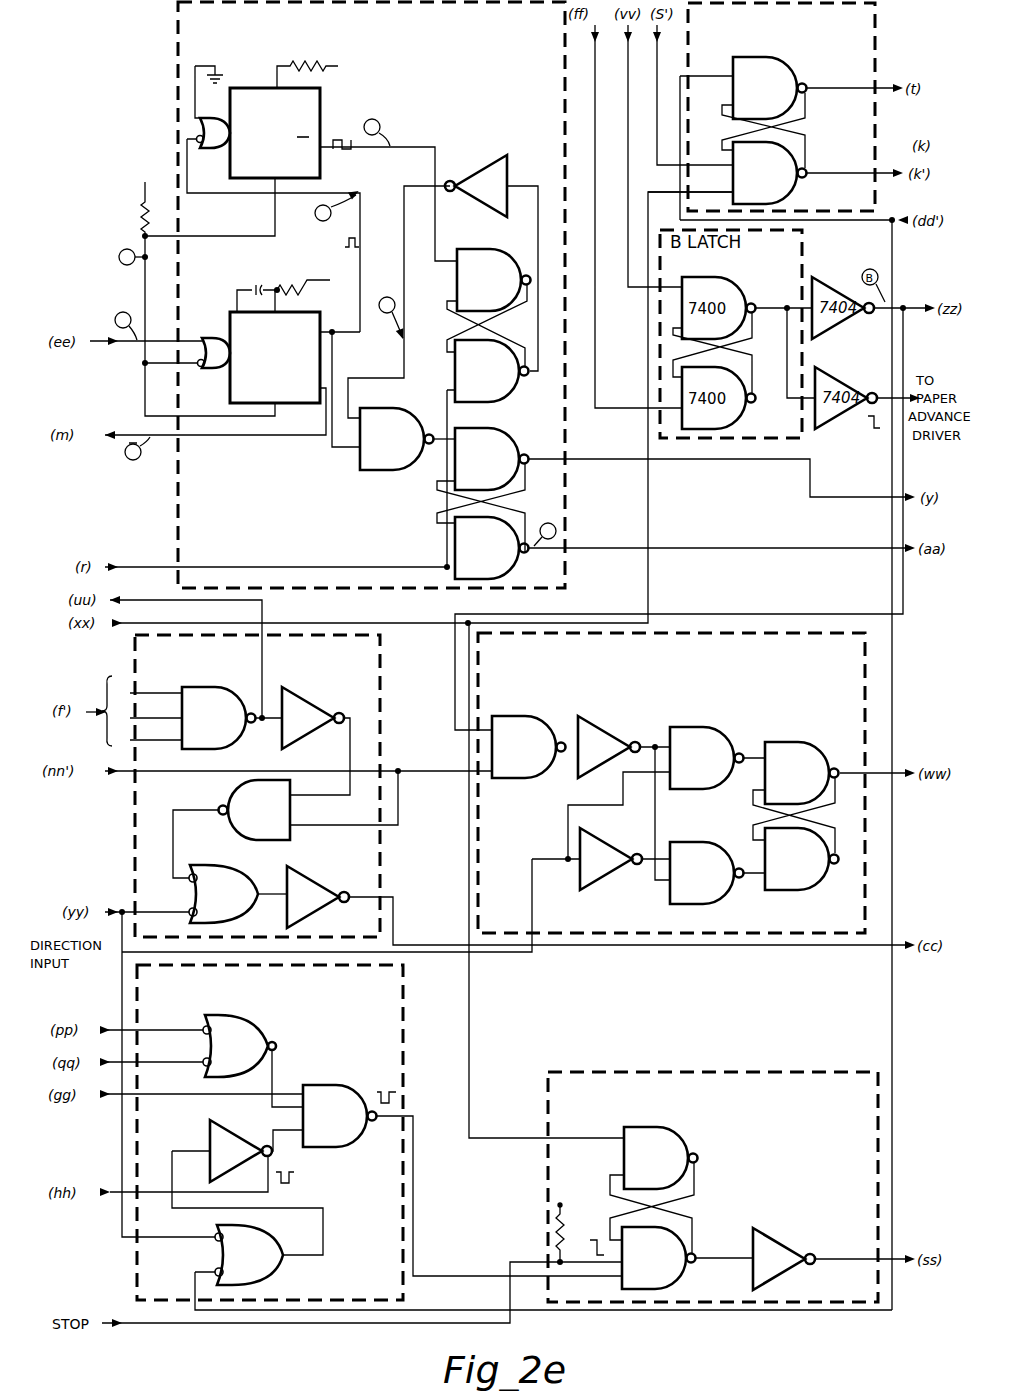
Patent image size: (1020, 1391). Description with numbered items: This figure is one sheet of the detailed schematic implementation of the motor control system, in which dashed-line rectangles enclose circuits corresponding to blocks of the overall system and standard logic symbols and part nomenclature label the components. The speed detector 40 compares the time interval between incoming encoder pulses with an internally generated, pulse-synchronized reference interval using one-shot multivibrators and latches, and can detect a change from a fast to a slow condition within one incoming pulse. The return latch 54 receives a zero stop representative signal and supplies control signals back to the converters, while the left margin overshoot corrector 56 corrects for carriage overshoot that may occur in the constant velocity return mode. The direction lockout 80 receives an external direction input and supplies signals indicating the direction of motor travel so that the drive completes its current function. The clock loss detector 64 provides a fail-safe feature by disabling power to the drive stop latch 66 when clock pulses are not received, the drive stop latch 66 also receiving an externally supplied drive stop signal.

The speed detector 40 is at (180, 53).
The return latch 54 is at (875, 60).
The left margin overshoot corrector 56 is at (134, 842).
The direction lockout 80 is at (478, 878).
The clock loss detector 64 is at (137, 1278).
The drive stop latch 66 is at (770, 1070).